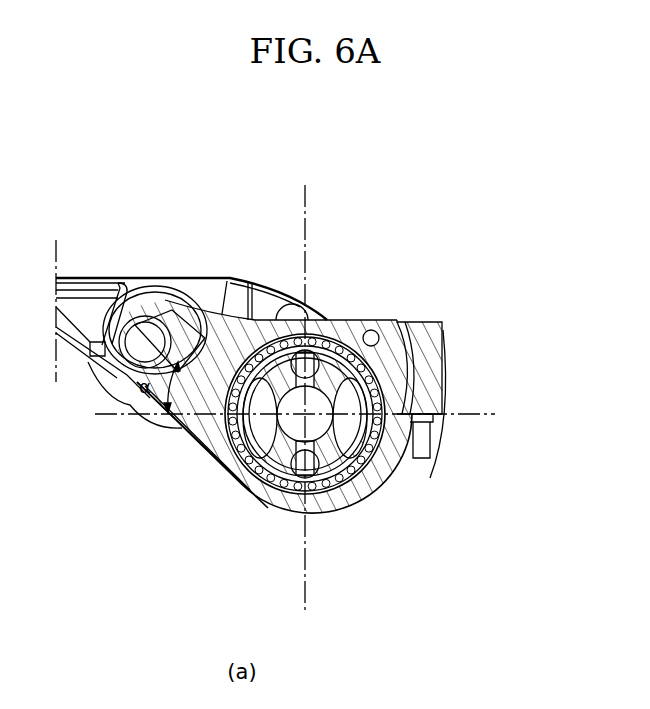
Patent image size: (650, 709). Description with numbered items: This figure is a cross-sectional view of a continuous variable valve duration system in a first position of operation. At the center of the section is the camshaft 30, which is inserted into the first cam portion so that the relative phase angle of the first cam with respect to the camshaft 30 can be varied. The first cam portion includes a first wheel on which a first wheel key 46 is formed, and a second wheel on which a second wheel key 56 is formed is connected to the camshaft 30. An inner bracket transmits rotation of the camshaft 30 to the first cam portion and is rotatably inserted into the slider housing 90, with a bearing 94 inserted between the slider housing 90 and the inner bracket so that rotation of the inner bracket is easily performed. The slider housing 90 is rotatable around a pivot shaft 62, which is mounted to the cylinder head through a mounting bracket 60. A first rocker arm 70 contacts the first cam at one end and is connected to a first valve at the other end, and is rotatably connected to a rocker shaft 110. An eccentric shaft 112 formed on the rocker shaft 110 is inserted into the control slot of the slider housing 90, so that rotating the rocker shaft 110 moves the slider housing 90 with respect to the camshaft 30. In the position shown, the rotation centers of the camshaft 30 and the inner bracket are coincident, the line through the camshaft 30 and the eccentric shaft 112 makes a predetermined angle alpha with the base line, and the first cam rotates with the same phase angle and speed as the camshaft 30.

The camshaft 30 is at (275, 465).
The first wheel key 46 is at (337, 480).
The second wheel key 56 is at (372, 337).
The mounting bracket 60 is at (437, 366).
The pivot shaft 62 is at (400, 330).
The first rocker arm 70 is at (217, 278).
The slider housing 90 is at (340, 346).
The bearing 94 is at (373, 473).
The rocker shaft 110 is at (175, 355).
The eccentric shaft 112 is at (133, 385).